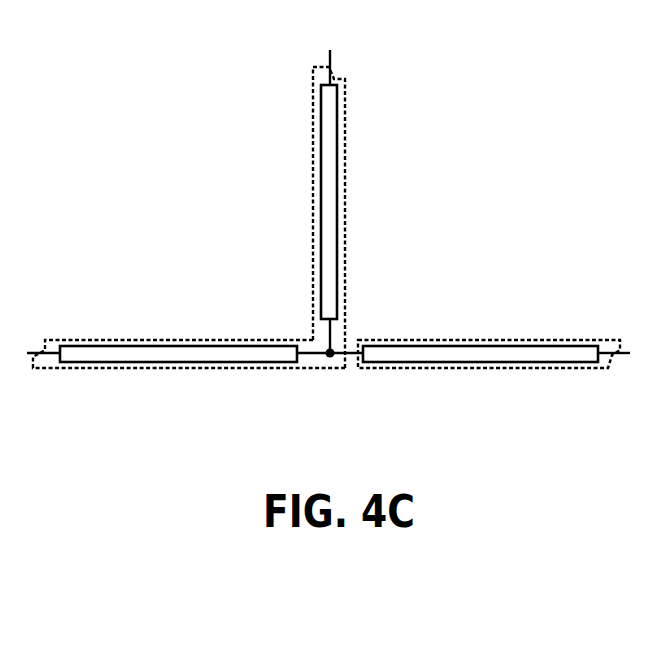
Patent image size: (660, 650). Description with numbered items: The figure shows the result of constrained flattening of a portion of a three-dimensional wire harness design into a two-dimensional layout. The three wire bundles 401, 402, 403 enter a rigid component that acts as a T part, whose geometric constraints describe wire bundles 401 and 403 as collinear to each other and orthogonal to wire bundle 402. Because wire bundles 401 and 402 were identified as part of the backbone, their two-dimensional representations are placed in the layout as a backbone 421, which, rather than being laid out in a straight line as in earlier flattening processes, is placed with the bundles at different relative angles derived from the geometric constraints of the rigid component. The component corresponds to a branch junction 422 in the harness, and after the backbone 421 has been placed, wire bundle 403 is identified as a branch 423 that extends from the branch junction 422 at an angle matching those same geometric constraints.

The wire bundle 401 is at (167, 340).
The wire bundle 402 is at (345, 128).
The wire bundle 403 is at (505, 340).
The backbone 421 is at (314, 192).
The branch junction 422 is at (330, 356).
The branch 423 is at (445, 368).